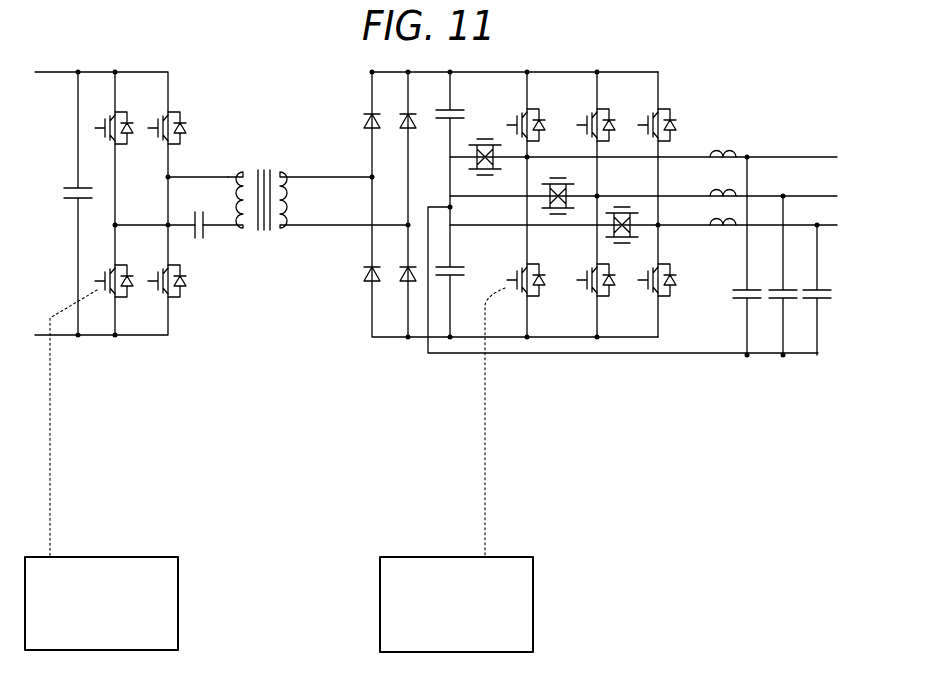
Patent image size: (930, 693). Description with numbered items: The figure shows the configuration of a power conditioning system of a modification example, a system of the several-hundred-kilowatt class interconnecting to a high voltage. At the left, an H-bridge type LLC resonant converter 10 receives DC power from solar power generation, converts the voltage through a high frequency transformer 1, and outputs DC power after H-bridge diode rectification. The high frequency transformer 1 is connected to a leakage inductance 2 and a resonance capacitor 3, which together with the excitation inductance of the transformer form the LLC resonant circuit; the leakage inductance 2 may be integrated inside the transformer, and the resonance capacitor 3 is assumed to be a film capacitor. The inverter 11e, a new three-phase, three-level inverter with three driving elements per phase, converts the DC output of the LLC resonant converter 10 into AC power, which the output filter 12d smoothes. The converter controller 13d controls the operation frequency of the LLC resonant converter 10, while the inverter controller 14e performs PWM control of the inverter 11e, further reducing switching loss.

The high frequency transformer 1 is at (280, 176).
The leakage inductance 2 is at (229, 172).
The resonance capacitor 3 is at (204, 240).
The LLC resonant converter 10 is at (37, 363).
The inverter 11e is at (445, 363).
The output filter 12d is at (687, 368).
The converter controller 13d is at (108, 557).
The inverter controller 14e is at (452, 557).